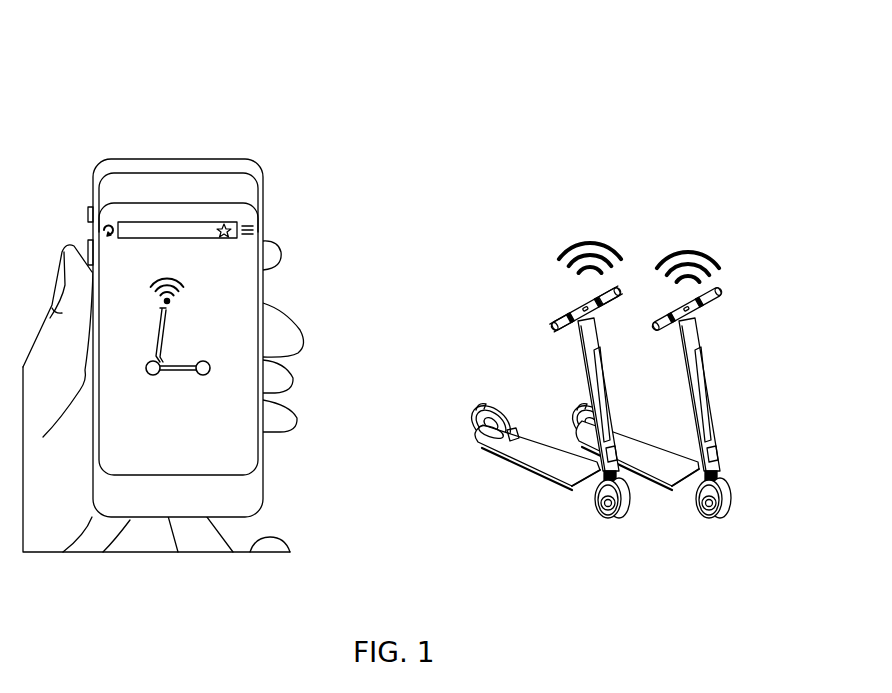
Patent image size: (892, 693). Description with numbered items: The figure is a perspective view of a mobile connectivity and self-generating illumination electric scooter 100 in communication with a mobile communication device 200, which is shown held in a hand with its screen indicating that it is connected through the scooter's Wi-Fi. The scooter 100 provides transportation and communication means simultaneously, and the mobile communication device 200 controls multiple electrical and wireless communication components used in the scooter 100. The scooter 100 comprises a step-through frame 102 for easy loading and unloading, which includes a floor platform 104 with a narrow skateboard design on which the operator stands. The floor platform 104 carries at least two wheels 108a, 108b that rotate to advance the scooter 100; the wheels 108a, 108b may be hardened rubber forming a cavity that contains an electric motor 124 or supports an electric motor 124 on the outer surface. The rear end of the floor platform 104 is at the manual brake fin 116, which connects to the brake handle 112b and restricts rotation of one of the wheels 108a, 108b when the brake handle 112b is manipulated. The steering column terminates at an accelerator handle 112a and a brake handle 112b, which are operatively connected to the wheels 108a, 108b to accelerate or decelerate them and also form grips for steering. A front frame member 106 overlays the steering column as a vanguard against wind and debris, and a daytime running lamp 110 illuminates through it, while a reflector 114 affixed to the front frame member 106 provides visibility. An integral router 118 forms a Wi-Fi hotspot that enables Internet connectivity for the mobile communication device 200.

The mobile connectivity and self-generating illumination electric scooter 100 is at (619, 310).
The step-through frame 102 is at (583, 381).
The floor platform 104 is at (551, 478).
The front frame member 106 is at (619, 376).
The wheel 108a is at (622, 517).
The wheel 108b is at (478, 426).
The daytime running lamp 110 is at (604, 395).
The accelerator handle 112a is at (552, 325).
The brake handle 112b is at (619, 291).
The reflector 114 is at (627, 441).
The manual brake fin 116 is at (481, 403).
The integral router 118 is at (579, 308).
The electric motor 124 is at (601, 519).
The mobile communication device 200 is at (140, 138).